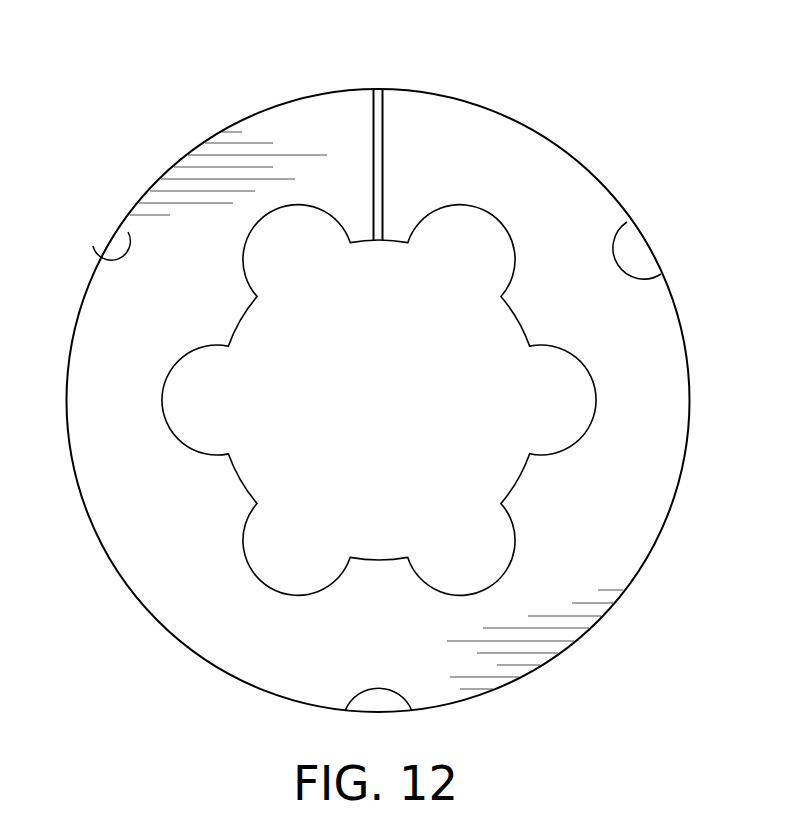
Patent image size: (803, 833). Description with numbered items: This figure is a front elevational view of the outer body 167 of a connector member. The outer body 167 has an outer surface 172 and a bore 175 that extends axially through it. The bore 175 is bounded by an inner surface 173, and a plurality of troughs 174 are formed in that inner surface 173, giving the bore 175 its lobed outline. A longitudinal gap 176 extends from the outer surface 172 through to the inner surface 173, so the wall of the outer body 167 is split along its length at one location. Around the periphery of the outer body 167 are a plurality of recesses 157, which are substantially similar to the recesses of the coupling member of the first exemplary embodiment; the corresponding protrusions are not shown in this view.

The recesses 157 is at (125, 257).
The outer body 167 is at (528, 117).
The outer surface 172 is at (689, 348).
The inner surface 173 is at (240, 322).
The troughs 174 is at (162, 407).
The bore 175 is at (438, 438).
The longitudinal gap 176 is at (373, 135).